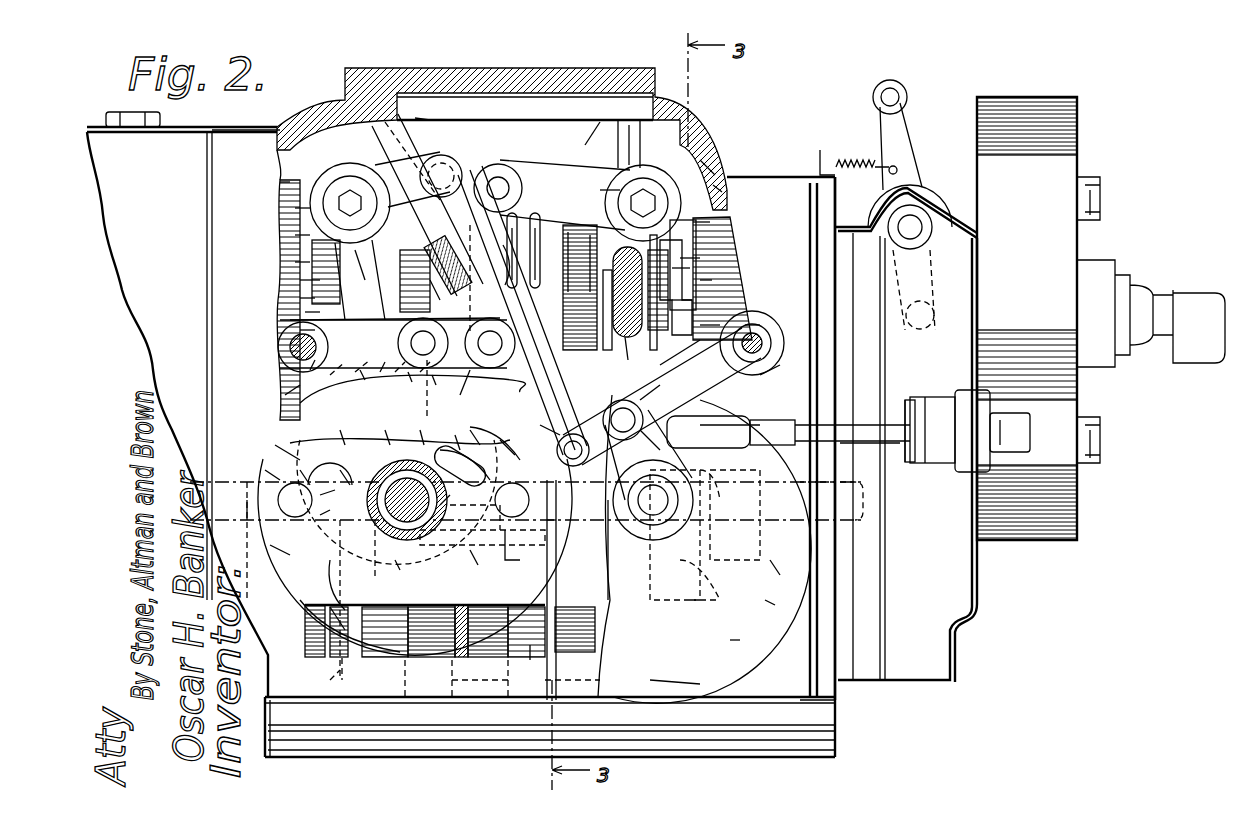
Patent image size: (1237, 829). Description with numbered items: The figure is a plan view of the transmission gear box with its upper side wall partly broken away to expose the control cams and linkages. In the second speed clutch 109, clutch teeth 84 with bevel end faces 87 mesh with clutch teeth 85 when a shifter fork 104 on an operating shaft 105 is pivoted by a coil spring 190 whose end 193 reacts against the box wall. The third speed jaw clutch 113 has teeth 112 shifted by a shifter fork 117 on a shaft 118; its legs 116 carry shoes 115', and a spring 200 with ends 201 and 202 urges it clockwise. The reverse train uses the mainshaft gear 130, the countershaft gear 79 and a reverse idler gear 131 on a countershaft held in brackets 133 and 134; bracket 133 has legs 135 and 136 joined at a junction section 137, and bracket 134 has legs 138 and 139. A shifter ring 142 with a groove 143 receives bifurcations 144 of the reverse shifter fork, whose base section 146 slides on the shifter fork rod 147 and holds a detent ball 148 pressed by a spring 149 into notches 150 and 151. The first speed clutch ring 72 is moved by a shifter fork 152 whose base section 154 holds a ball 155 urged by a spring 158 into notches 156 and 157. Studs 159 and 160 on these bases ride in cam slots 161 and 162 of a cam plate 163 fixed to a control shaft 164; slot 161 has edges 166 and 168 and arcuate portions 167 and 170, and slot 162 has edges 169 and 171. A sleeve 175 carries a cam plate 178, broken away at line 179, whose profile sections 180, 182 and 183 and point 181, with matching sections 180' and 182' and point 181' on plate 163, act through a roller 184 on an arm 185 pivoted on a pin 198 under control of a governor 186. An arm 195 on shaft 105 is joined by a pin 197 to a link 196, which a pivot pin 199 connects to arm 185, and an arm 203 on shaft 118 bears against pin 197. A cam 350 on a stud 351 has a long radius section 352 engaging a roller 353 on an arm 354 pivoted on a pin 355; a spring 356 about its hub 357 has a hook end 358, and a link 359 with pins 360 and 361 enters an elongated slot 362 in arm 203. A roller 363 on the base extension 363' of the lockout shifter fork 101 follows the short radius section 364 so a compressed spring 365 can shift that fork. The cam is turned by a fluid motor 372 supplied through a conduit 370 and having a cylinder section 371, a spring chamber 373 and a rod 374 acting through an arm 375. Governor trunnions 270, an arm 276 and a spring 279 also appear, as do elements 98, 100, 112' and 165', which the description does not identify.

The clutch ring 72 is at (330, 680).
The gear 79 is at (530, 655).
The clutch teeth 84 is at (680, 300).
The clutch teeth 85 is at (745, 272).
The bevel end face 87 is at (680, 258).
The plunger 98 is at (735, 640).
The spring 100 is at (690, 603).
The shifter fork 101 is at (690, 678).
The shifter fork 104 is at (690, 224).
The operating shaft 105 is at (715, 185).
The second speed clutch 109 is at (672, 270).
The clutch teeth 112 is at (263, 294).
The pawl 112' is at (264, 309).
The jaw clutch 113 is at (302, 284).
The shoes 115' is at (267, 329).
The legs 116 is at (300, 262).
The shifter fork 117 is at (300, 237).
The shaft 118 is at (300, 210).
The mainshaft gear 130 is at (570, 228).
The reverse idler gear 131 is at (578, 230).
The gear box bracket 133 is at (381, 248).
The gear box bracket 134 is at (770, 215).
The vertical leg 135 is at (448, 235).
The leg 136 is at (408, 140).
The junction section 137 is at (445, 293).
The leg 138 is at (620, 363).
The horizontal leg 139 is at (618, 158).
The shifter ring 142 is at (500, 245).
The groove 143 is at (533, 245).
The bifurcations 144 is at (522, 310).
The sleeve-like base section 146 is at (372, 611).
The shifter fork rod 147 is at (556, 530).
The detent ball 148 is at (465, 525).
The spring 149 is at (470, 569).
The notch 150 is at (455, 493).
The notch 151 is at (475, 515).
The shifter fork 152 is at (336, 640).
The sleeve-like base section 154 is at (357, 469).
The ball 155 is at (250, 500).
The notch 156 is at (285, 495).
The notch 157 is at (338, 511).
The spring 158 is at (265, 555).
The cylindrical stud 159 is at (512, 500).
The cylindrical stud 160 is at (295, 500).
The cam slot 161 is at (470, 445).
The cam slot 162 is at (290, 470).
The cam plate 163 is at (388, 574).
The control shaft 164 is at (410, 478).
The pawl 165' is at (462, 436).
The edge 166 is at (482, 425).
The arcuate slot section 167 is at (335, 560).
The edge 168 is at (470, 480).
The edge 169 is at (312, 447).
The arcuate portion 170 is at (512, 560).
The edge 171 is at (340, 491).
The sleeve 175 is at (385, 470).
The cam plate 178 is at (355, 427).
The line 179 is at (395, 427).
The edge profile section 180 is at (332, 373).
The edge profile section 180' is at (345, 388).
The point 181 is at (395, 374).
The cam point 181' is at (397, 389).
The cam section 182 is at (430, 390).
The cam profile section 182' is at (432, 427).
The cam section 183 is at (458, 394).
The roller 184 is at (430, 345).
The arm 185 is at (290, 392).
The governor 186 is at (1065, 540).
The coil spring 190 is at (700, 160).
The end 193 is at (588, 136).
The arm 195 is at (593, 182).
The link 196 is at (497, 267).
The pin 197 is at (508, 178).
The pin 198 is at (290, 348).
The pivot pin 199 is at (490, 340).
The spring 200 is at (290, 182).
The end section 201 is at (418, 121).
The end 202 is at (395, 337).
The arm 203 is at (367, 203).
The trunnions 270 is at (935, 315).
The arm 276 is at (905, 140).
The spring 279 is at (858, 165).
The cam 350 is at (610, 545).
The stud 351 is at (653, 500).
The long radius profile section 352 is at (735, 470).
The roller 353 is at (623, 420).
The arm 354 is at (690, 359).
The pin 355 is at (770, 328).
The spring 356 is at (700, 328).
The hub 357 is at (748, 325).
The end section 358 is at (778, 379).
The link 359 is at (555, 421).
The pin 360 is at (573, 450).
The pin 361 is at (455, 172).
The elongated slot 362 is at (448, 158).
The roller 363 is at (786, 577).
The base extension section 363' is at (786, 609).
The short radius profile section 364 is at (708, 580).
The compressed spring 365 is at (723, 518).
The conduit 370 is at (1020, 420).
The cylinder section 371 is at (938, 398).
The fluid motor 372 is at (893, 394).
The spring chamber 373 is at (890, 448).
The rod 374 is at (790, 428).
The arm 375 is at (663, 451).